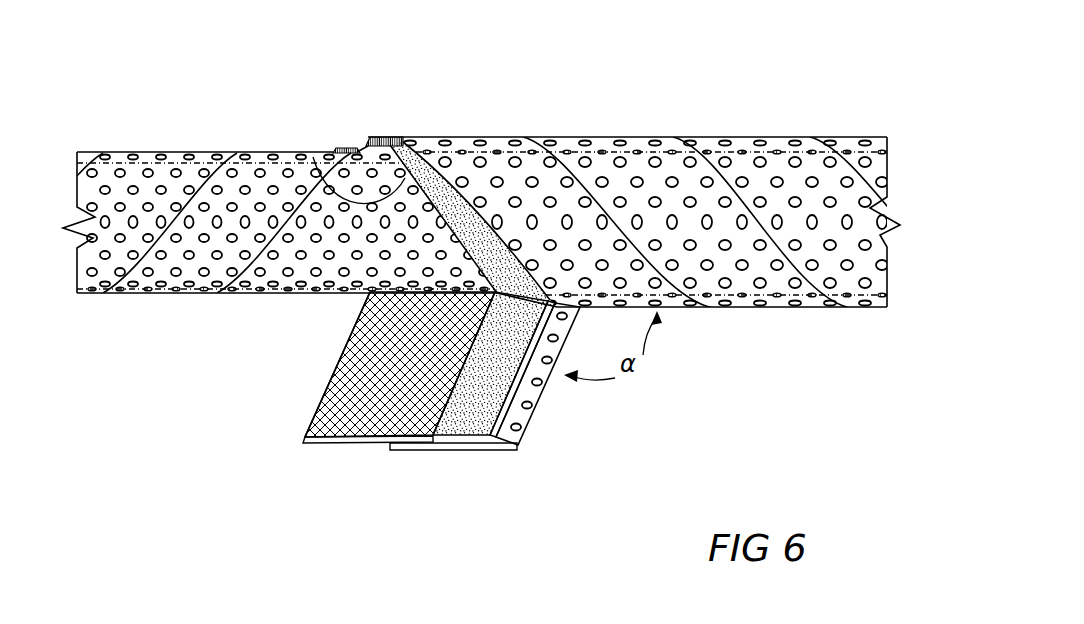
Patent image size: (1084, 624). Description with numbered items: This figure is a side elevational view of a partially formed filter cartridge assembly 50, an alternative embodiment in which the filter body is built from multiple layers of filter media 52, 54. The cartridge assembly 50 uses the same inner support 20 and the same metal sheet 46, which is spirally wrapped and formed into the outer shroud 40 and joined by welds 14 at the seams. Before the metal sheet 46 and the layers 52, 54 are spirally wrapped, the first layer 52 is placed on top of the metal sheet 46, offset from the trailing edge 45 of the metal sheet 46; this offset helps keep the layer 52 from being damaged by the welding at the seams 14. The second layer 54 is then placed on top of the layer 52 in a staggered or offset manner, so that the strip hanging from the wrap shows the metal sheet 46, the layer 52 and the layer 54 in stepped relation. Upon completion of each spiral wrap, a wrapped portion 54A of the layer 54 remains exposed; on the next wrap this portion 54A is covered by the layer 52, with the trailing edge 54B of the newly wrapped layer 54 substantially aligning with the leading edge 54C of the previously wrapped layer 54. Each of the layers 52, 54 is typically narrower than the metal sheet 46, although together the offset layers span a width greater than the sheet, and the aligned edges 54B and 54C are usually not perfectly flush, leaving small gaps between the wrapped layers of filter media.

The welds 14 is at (567, 160).
The inner support 20 is at (167, 292).
The outer shroud 40 is at (817, 273).
The trailing edge 45 is at (550, 395).
The metal sheet 46 is at (505, 455).
The filter cartridge assembly 50 is at (499, 106).
The filter media layer 52 is at (483, 428).
The filter media layer 54 is at (337, 445).
The wrapped portion 54A is at (360, 152).
The trailing edge 54B is at (462, 427).
The leading edge 54C is at (312, 152).